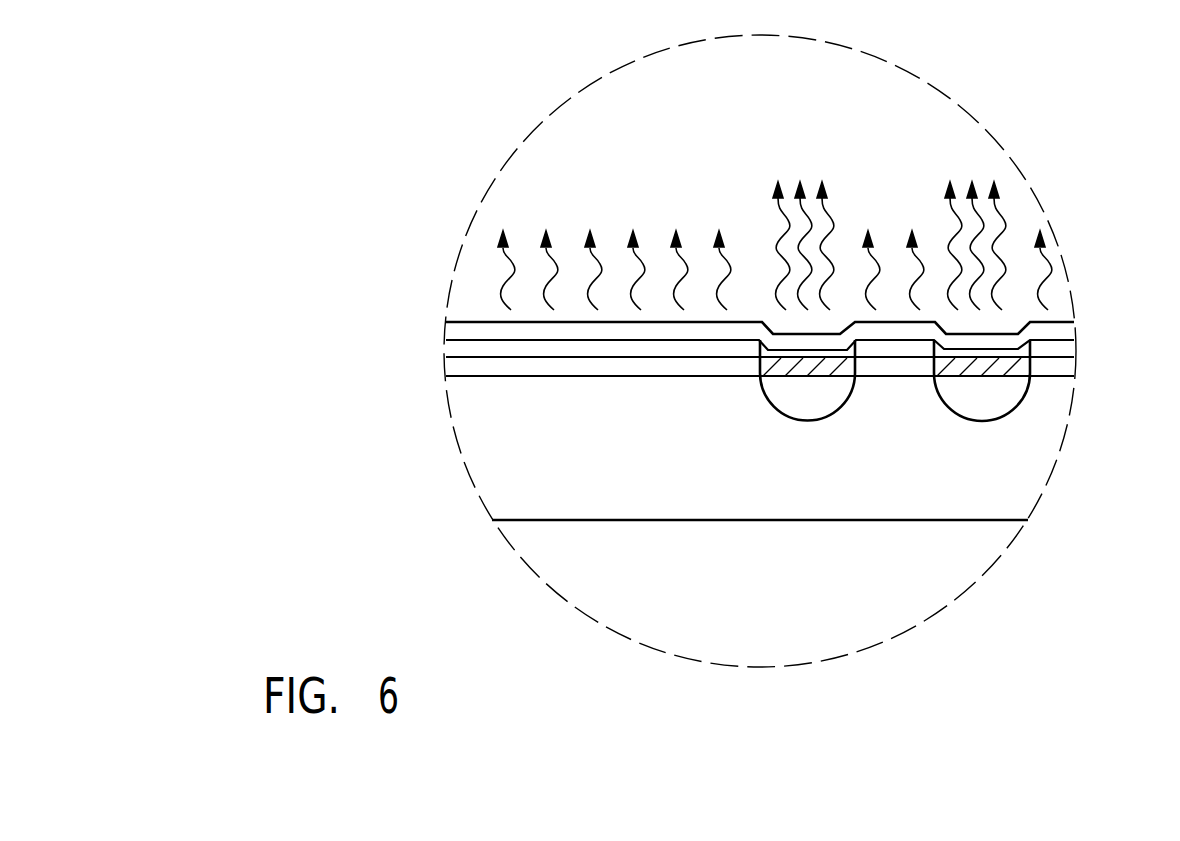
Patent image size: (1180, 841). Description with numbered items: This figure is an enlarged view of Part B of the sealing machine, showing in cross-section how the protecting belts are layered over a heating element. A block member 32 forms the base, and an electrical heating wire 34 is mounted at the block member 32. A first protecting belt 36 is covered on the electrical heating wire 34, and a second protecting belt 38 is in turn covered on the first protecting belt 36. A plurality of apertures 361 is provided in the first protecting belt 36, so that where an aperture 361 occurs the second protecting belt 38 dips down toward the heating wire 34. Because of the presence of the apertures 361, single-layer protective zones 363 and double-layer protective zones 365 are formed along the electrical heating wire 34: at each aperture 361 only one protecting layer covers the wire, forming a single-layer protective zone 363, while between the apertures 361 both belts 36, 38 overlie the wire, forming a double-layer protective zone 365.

The Part B is at (1058, 99).
The block member 32 is at (766, 612).
The electrical heating wire 34 is at (448, 366).
The first protecting belt 36 is at (1073, 346).
The second protecting belt 38 is at (457, 321).
The aperture 361 is at (1020, 404).
The single-layer protective zone 363 is at (805, 392).
The double-layer protective zone 365 is at (895, 392).